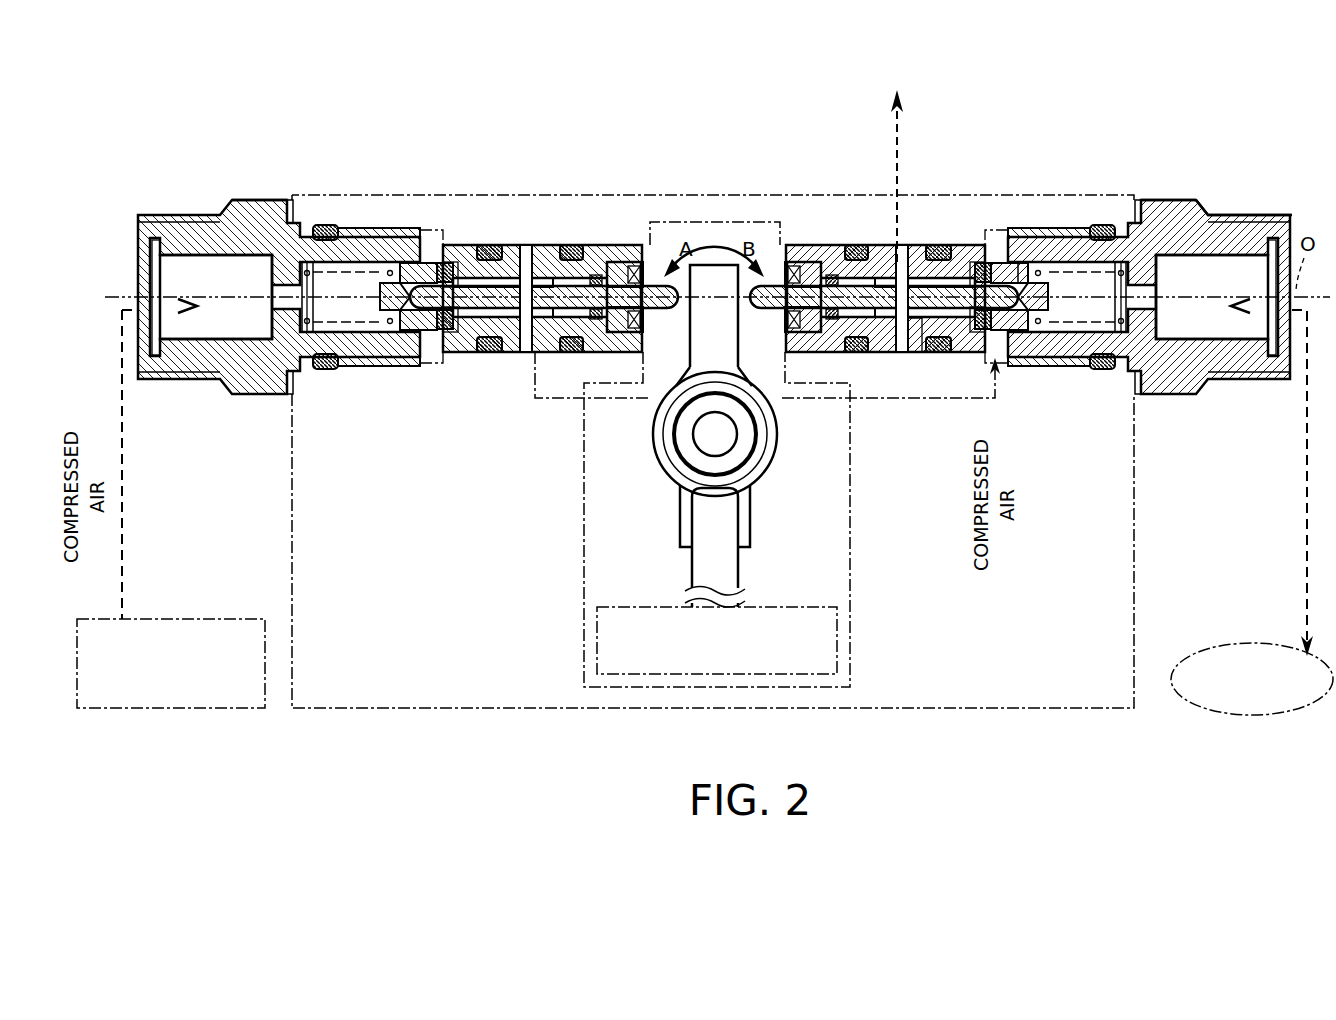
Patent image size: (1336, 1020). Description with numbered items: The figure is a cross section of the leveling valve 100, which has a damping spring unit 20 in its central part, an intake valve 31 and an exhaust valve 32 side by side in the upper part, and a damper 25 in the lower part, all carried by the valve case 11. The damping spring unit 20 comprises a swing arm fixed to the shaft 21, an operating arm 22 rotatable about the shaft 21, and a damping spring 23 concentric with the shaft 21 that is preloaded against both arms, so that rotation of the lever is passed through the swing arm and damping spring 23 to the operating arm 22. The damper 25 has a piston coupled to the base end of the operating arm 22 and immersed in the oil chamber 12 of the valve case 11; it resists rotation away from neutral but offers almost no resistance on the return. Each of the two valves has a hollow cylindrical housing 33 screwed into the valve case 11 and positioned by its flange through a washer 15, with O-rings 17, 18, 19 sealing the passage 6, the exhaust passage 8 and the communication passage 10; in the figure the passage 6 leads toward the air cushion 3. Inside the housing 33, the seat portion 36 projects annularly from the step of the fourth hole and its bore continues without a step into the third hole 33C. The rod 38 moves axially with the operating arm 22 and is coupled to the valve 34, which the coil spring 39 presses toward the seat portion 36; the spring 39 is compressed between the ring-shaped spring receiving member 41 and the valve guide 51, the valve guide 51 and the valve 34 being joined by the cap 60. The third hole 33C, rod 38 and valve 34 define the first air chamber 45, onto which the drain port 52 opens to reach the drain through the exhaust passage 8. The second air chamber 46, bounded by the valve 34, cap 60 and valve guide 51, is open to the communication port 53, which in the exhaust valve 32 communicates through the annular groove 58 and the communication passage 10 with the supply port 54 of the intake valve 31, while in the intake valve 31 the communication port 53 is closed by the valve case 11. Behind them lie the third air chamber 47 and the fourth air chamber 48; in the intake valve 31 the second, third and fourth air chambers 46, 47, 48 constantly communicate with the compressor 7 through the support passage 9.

The leveling valve 100 is at (1283, 215).
The air cushion 3 is at (1268, 644).
The passage 6 is at (1303, 400).
The compressor 7 is at (160, 619).
The exhaust passage 8 is at (835, 245).
The support passage 9 is at (122, 413).
The communication passage 10 is at (535, 365).
The valve case 11 is at (292, 500).
The oil chamber 12 is at (584, 557).
The washer 15 is at (288, 222).
The O-ring 17 is at (853, 352).
The O-ring 18 is at (908, 325).
The O-ring 19 is at (1100, 345).
The damping spring unit 20 is at (680, 459).
The shaft 21 is at (707, 432).
The operating arm 22 is at (714, 283).
The damping spring 23 is at (685, 495).
The damper 25 is at (598, 655).
The intake valve 31 is at (642, 260).
The exhaust valve 32 is at (788, 262).
The housing 33 is at (232, 222).
The third hole 33C is at (358, 262).
The valve 34 is at (450, 262).
The seat portion 36 is at (466, 285).
The rod 38 is at (572, 262).
The spring 39 is at (294, 250).
The spring receiving member 41 is at (300, 340).
The first air chamber 45 is at (452, 318).
The second air chamber 46 is at (410, 332).
The third air chamber 47 is at (375, 312).
The fourth air chamber 48 is at (236, 322).
The valve guide 51 is at (386, 238).
The drain port 52 is at (872, 262).
The communication port 53 is at (443, 263).
The supply port 54 is at (538, 250).
The annular groove 58 is at (995, 398).
The cap 60 is at (1018, 272).